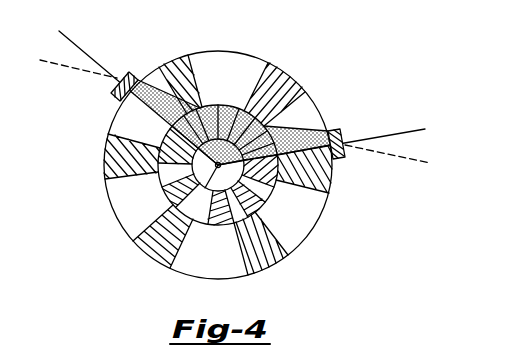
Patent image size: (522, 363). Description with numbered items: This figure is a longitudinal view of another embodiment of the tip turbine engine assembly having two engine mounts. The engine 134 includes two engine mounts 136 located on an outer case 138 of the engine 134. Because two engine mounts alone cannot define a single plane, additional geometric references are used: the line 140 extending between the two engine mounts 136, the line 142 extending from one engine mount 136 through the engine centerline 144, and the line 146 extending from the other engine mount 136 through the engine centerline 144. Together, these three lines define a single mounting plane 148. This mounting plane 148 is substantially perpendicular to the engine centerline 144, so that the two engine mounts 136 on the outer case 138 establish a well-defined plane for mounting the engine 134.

The engine 134 is at (131, 264).
The engine mounts 136 is at (112, 100).
The outer case 138 is at (316, 232).
The line 140 is at (410, 154).
The line 142 is at (88, 54).
The engine centerline 144 is at (186, 203).
The line 146 is at (387, 134).
The mounting plane 148 is at (293, 132).